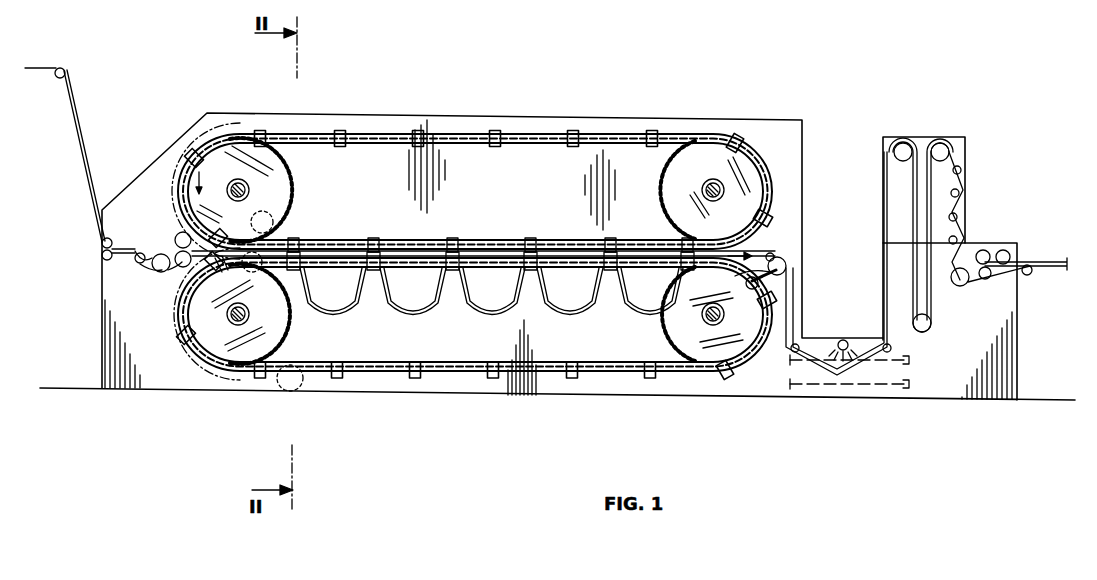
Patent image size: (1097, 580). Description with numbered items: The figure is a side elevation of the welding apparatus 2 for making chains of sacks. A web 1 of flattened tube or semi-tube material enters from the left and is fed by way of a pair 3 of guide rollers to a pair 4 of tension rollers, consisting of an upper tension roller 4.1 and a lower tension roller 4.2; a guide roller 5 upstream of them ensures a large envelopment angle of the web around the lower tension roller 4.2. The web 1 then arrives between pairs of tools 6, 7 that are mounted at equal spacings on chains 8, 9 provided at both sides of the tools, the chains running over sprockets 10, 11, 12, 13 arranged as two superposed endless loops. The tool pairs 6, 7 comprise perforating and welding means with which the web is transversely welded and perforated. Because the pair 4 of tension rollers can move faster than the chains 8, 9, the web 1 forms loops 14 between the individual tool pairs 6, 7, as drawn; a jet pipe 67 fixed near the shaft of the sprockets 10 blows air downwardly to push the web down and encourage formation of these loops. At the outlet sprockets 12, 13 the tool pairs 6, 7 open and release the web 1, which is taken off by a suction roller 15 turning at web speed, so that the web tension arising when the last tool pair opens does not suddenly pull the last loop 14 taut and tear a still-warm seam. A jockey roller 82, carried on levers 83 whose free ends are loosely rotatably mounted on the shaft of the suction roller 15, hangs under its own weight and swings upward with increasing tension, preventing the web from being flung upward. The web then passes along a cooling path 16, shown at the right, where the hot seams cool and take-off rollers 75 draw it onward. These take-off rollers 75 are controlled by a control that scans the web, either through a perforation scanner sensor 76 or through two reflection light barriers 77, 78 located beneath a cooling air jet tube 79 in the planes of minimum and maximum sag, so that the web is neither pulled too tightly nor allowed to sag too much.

The web 1 is at (89, 140).
The apparatus 2 is at (529, 47).
The pair of guide rollers 3 is at (112, 242).
The pair of tension rollers 4 is at (162, 250).
The upper tension roller 4.1 is at (175, 240).
The lower tension roller 4.2 is at (179, 266).
The guide roller 5 is at (153, 269).
The tool 6 is at (222, 236).
The tool 7 is at (218, 274).
The chain 8 is at (353, 238).
The chain 9 is at (352, 268).
The sprocket 10 is at (260, 197).
The sprocket 11 is at (278, 333).
The sprocket 12 is at (662, 187).
The sprocket 13 is at (665, 337).
The loop 14 is at (338, 318).
The suction roller 15 is at (786, 264).
The cooling path 16 is at (909, 205).
The jet pipe 67 is at (261, 205).
The take-off rollers 75 is at (987, 268).
The sensor 76 is at (963, 240).
The reflection light barrier 77 is at (907, 362).
The reflection light barrier 78 is at (907, 384).
The cooling air jet tube 79 is at (843, 340).
The jockey roller 82 is at (749, 283).
The lever 83 is at (790, 278).